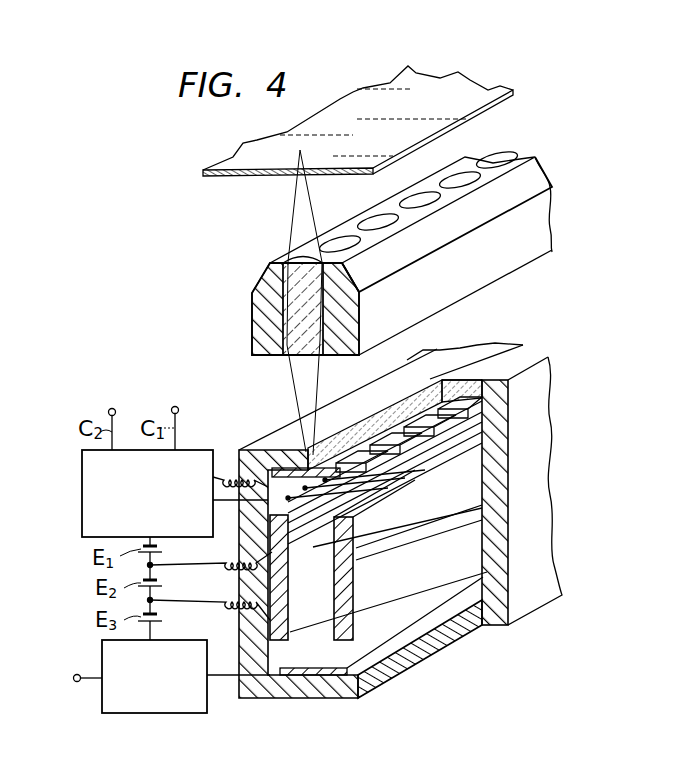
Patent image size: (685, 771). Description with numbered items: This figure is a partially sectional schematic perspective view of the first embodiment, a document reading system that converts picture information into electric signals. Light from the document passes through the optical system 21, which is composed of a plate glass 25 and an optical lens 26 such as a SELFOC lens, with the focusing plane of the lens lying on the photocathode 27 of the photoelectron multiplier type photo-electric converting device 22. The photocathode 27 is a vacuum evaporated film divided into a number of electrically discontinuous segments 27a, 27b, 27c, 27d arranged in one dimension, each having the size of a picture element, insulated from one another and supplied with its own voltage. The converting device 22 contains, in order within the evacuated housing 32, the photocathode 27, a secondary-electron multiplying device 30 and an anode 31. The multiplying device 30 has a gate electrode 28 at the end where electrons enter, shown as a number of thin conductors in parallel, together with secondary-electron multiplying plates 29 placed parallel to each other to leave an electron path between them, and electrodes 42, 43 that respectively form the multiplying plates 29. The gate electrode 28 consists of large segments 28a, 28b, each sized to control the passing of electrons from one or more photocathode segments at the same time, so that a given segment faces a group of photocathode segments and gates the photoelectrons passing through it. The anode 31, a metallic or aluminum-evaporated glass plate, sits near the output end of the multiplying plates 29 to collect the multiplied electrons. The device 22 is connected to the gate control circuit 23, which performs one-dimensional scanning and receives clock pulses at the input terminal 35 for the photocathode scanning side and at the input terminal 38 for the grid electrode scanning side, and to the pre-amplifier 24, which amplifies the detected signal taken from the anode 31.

The optical system 21 is at (416, 210).
The photo-electric converting device 22 is at (459, 495).
The gate control circuit 23 is at (196, 450).
The pre-amplifier 24 is at (170, 713).
The plate glass 25 is at (510, 92).
The optical lens 26 is at (421, 252).
The photocathode 27 is at (445, 382).
The photocathode segment 27a is at (334, 460).
The photocathode segment 27b is at (378, 440).
The photocathode segment 27c is at (410, 428).
The photocathode segment 27d is at (482, 395).
The gate electrode 28 is at (470, 478).
The gate electrode segment 28a is at (382, 476).
The gate electrode segment 28b is at (483, 419).
The secondary-electron multiplying plate 29 is at (470, 506).
The secondary-electron multiplying device 30 is at (464, 475).
The anode 31 is at (470, 582).
The evacuated housing 32 is at (470, 647).
The input terminal for clock pulses 35 is at (175, 406).
The input terminal for clock pulses 38 is at (112, 408).
The electrode 42 is at (470, 470).
The electrode 43 is at (470, 550).